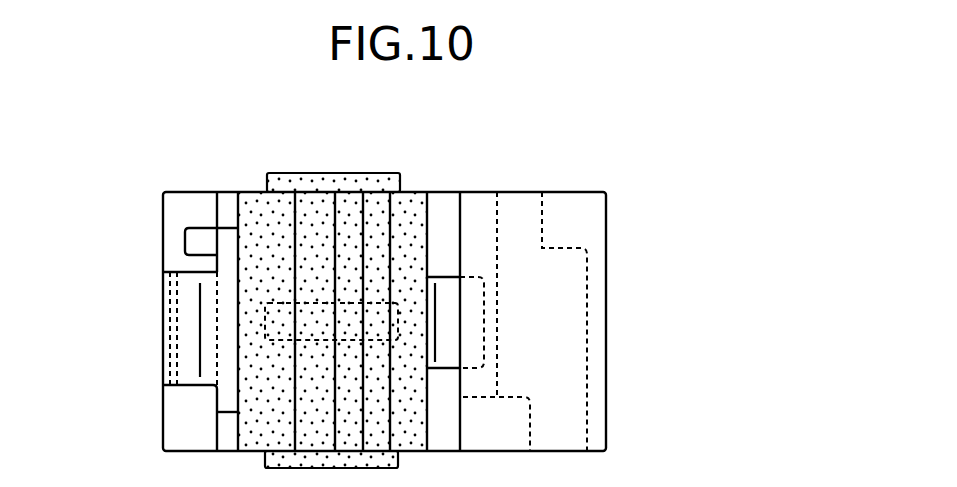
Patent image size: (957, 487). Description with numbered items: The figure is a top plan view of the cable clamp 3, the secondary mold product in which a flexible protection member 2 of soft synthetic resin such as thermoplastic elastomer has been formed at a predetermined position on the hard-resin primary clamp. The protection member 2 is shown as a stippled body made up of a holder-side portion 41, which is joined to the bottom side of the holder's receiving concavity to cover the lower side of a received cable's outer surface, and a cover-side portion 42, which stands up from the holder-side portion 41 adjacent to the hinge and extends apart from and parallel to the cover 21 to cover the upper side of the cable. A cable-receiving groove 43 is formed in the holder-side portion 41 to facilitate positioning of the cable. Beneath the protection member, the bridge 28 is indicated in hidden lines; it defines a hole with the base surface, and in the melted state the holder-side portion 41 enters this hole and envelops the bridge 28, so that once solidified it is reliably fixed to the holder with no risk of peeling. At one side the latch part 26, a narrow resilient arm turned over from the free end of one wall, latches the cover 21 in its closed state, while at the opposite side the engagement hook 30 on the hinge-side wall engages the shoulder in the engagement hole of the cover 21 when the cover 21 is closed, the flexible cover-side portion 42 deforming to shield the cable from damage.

The protection member 2 is at (334, 283).
The cable clamp 3 is at (634, 269).
The cover 21 is at (568, 192).
The latch part 26 is at (187, 303).
The bridge 28 is at (265, 319).
The engagement hook 30 is at (443, 320).
The holder-side portion 41 is at (260, 225).
The cover-side portion 42 is at (353, 230).
The cable-receiving groove 43 is at (314, 228).